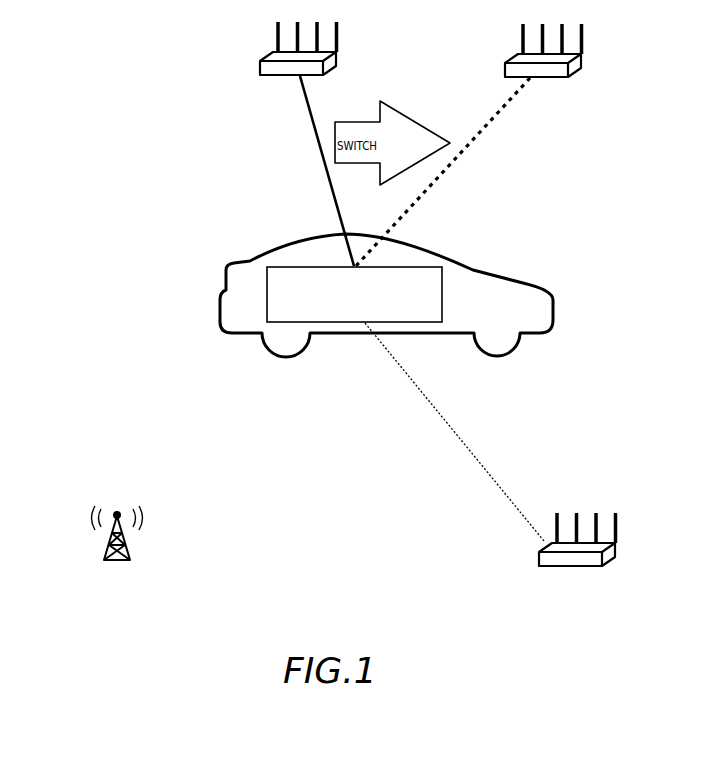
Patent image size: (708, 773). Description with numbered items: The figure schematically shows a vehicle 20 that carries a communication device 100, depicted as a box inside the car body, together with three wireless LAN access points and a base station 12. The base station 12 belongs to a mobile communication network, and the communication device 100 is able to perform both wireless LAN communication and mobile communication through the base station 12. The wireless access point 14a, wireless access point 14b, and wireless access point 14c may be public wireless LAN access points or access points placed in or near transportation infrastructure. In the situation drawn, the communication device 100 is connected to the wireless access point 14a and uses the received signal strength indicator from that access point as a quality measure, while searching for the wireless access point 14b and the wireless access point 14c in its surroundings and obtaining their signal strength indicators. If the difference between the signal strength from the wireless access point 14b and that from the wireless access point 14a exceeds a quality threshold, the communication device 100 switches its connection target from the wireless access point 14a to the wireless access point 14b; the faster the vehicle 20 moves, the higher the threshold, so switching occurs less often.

The base station 12 is at (105, 541).
The wireless access point 14a is at (260, 62).
The wireless access point 14b is at (505, 64).
The wireless access point 14c is at (540, 553).
The vehicle 20 is at (525, 283).
The communication device 100 is at (425, 266).